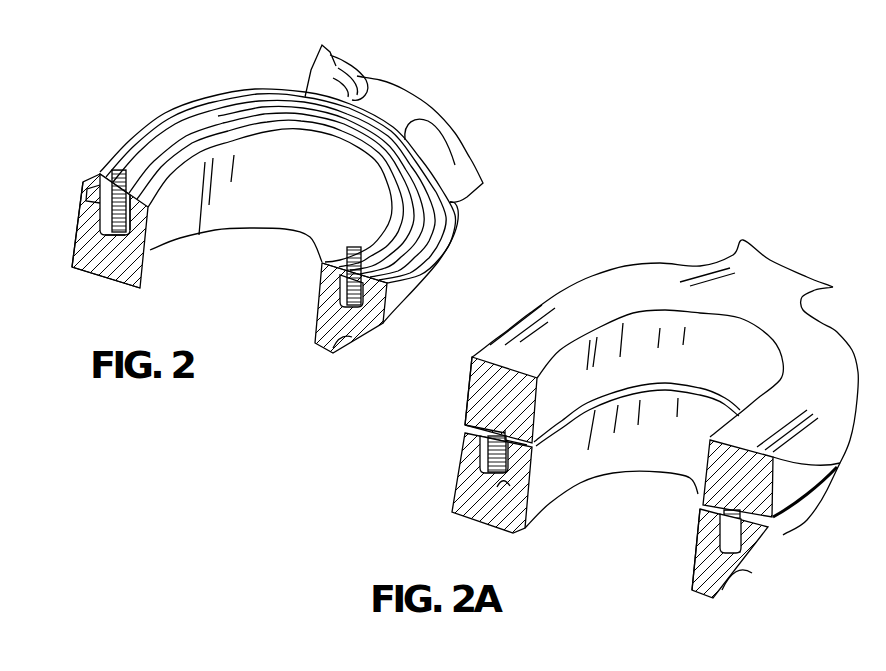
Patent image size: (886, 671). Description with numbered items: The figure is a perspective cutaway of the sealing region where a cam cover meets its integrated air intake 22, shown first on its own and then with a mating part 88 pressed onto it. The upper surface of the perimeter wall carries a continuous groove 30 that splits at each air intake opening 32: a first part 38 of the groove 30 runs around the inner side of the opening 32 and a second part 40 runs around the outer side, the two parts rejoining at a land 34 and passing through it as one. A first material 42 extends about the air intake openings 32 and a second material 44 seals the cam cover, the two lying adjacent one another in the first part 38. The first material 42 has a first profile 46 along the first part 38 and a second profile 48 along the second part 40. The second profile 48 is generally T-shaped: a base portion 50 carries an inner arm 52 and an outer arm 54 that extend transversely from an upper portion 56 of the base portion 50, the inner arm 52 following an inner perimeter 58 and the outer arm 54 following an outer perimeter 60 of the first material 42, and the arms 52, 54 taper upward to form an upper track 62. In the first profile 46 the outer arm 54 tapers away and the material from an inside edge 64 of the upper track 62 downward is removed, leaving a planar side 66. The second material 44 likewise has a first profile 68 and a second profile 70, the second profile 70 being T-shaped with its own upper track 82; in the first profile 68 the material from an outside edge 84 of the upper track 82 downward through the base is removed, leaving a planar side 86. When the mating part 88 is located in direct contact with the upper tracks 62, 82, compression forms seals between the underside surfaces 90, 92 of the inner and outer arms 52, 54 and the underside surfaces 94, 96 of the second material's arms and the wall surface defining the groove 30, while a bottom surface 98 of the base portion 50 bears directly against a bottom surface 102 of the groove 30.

In FIG. 2A, the air intake 22 is at (705, 585).
In FIG. 2, the continuous groove 30 is at (97, 267).
In FIG. 2A, the continuous groove 30 is at (465, 513).
In FIG. 2, the opening 32 is at (245, 263).
In FIG. 2A, the opening 32 is at (623, 507).
In FIG. 2, the land 34 is at (392, 96).
In FIG. 2, the first part of the perimeter groove 38 is at (177, 100).
In FIG. 2, the second part of the perimeter groove 40 is at (430, 230).
In FIG. 2, the first material 42 is at (113, 228).
In FIG. 2A, the first material 42 is at (505, 470).
In FIG. 2, the second material 44 is at (100, 198).
In FIG. 2A, the second material 44 is at (477, 453).
In FIG. 2, the first profile 46 is at (122, 165).
In FIG. 2, the second profile 48 is at (357, 233).
In FIG. 2, the base portion 50 is at (370, 290).
In FIG. 2, the inner arm 52 is at (335, 253).
In FIG. 2, the outer arm 54 is at (365, 268).
In FIG. 2, the upper portion 56 is at (328, 263).
In FIG. 2, the inner perimeter 58 is at (333, 147).
In FIG. 2, the outer perimeter 60 is at (440, 173).
In FIG. 2A, the upper track 62 is at (510, 427).
In FIG. 2, the inside edge 64 is at (133, 185).
In FIG. 2, the planar side 66 is at (112, 217).
In FIG. 2, the first profile 68 is at (97, 170).
In FIG. 2, the second profile 70 is at (343, 70).
In FIG. 2A, the upper track 82 is at (500, 427).
In FIG. 2, the outside edge 84 is at (100, 183).
In FIG. 2, the planar side 86 is at (78, 237).
In FIG. 2A, the mating part 88 is at (478, 395).
In FIG. 2A, the underside surface 90 is at (703, 512).
In FIG. 2A, the underside surface 92 is at (767, 540).
In FIG. 2A, the underside surface 94 is at (467, 433).
In FIG. 2, the underside surface 96 is at (407, 98).
In FIG. 2A, the bottom surface 98 is at (710, 557).
In FIG. 2A, the bottom surface of the groove 102 is at (497, 487).